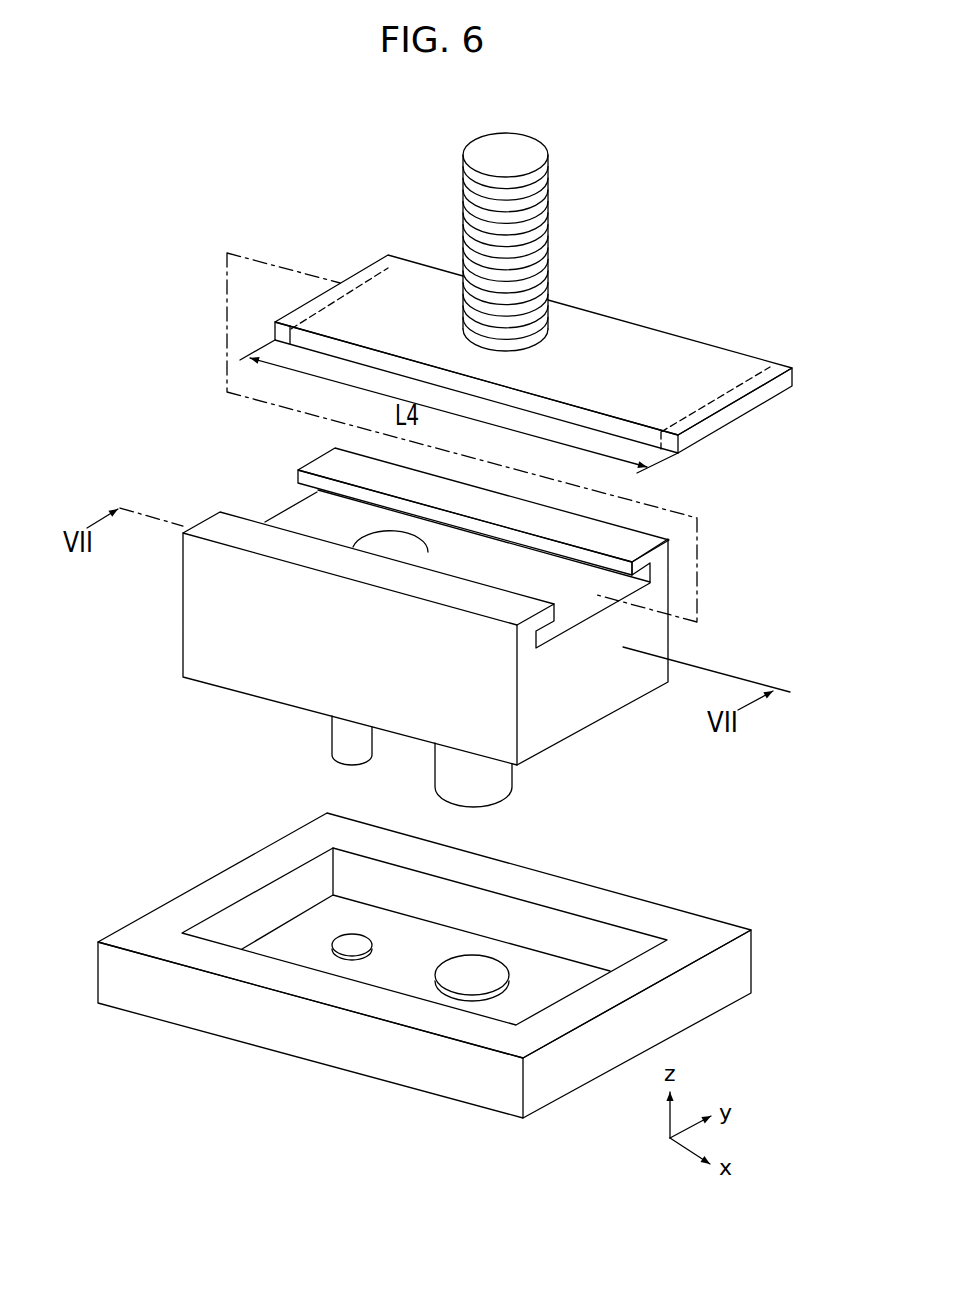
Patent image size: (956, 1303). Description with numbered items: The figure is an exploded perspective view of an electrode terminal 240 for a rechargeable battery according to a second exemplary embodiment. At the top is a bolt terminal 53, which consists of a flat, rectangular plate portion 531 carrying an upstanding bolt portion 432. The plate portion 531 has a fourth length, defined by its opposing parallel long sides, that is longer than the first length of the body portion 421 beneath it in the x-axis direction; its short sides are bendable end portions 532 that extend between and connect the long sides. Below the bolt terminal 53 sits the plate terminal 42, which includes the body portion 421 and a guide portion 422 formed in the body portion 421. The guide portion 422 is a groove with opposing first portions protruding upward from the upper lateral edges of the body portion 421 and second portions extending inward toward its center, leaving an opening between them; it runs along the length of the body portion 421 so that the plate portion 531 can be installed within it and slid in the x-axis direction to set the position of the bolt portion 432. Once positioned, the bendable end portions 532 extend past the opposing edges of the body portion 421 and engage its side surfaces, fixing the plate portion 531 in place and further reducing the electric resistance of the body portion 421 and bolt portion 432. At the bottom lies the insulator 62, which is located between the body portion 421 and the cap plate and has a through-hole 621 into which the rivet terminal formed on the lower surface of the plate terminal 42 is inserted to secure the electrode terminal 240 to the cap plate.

The electrode terminal 240 is at (226, 225).
The bolt terminal 53 is at (474, 293).
The bolt portion 432 is at (463, 206).
The plate portion 531 is at (388, 281).
The bendable end portions 532 is at (265, 305).
The plate terminal 42 is at (387, 582).
The body portion 421 is at (240, 608).
The guide portion 422 is at (322, 463).
The insulator 62 is at (424, 965).
The through-hole 621 is at (492, 967).